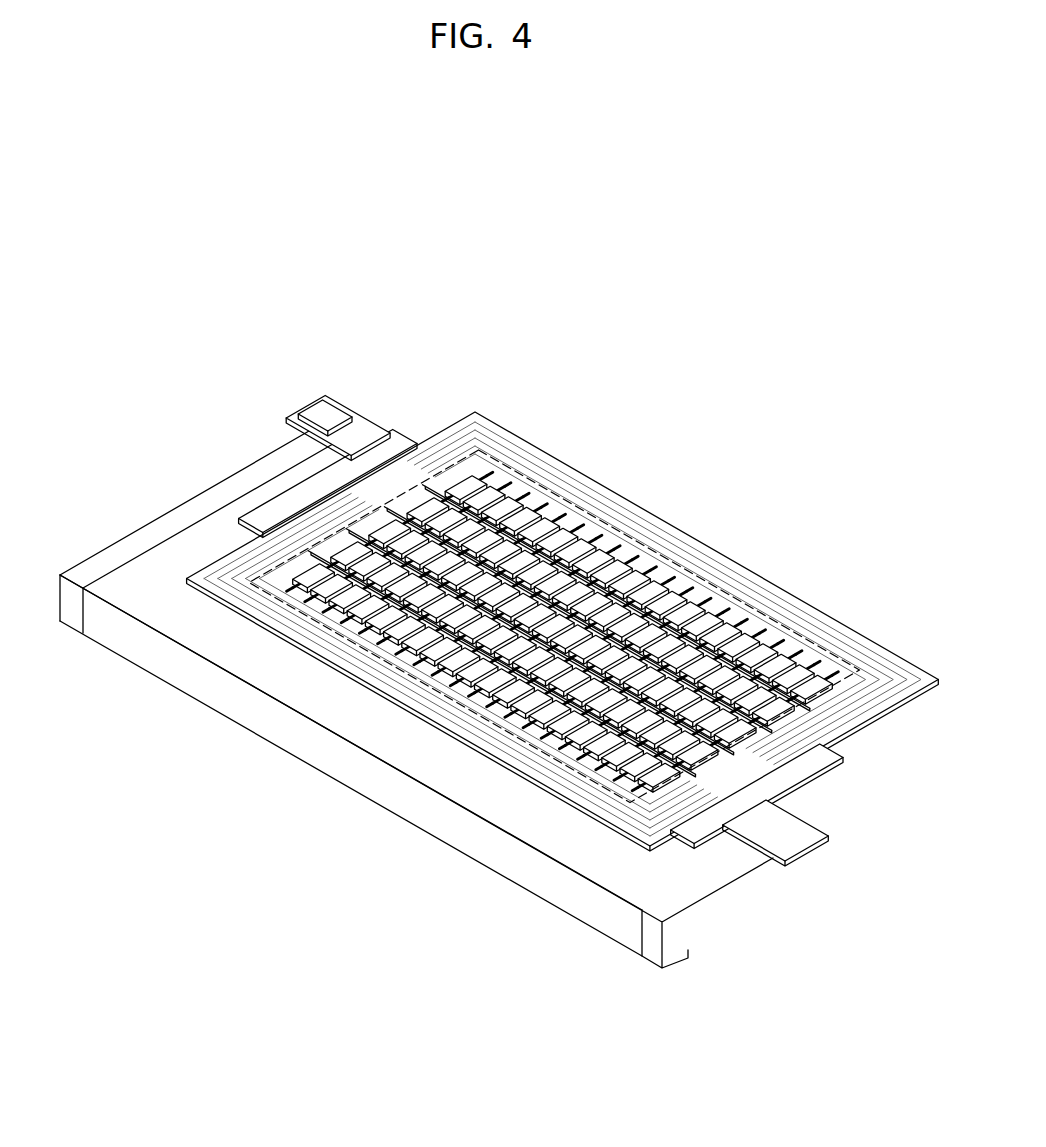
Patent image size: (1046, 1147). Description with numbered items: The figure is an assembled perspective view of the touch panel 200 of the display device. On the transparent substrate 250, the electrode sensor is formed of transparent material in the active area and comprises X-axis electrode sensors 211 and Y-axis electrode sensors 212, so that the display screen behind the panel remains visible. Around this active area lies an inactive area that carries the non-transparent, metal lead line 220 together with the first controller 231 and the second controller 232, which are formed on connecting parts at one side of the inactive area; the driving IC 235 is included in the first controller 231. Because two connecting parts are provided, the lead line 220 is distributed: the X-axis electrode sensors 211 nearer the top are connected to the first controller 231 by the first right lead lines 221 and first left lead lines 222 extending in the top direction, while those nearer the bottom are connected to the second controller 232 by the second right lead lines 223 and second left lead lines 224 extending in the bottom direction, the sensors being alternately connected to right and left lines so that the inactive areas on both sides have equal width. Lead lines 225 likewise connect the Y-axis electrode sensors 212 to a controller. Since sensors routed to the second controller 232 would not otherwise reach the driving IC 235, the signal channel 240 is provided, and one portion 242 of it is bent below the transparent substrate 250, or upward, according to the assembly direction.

The touch panel 200 is at (499, 651).
The X-axis electrode sensors 211 is at (563, 583).
The Y-axis electrode sensors 212 is at (443, 487).
The lead line 220 is at (563, 600).
The first right lead lines 221 is at (535, 456).
The first left lead lines 222 is at (265, 607).
The second right lead lines 223 is at (815, 606).
The second left lead lines 224 is at (595, 805).
The lead lines 225 is at (343, 497).
The first controller 231 is at (332, 436).
The second controller 232 is at (790, 775).
The driving IC 235 is at (330, 410).
The signal channel 240 is at (416, 692).
The portion of the signal channel 242 is at (355, 775).
The transparent substrate 250 is at (866, 684).